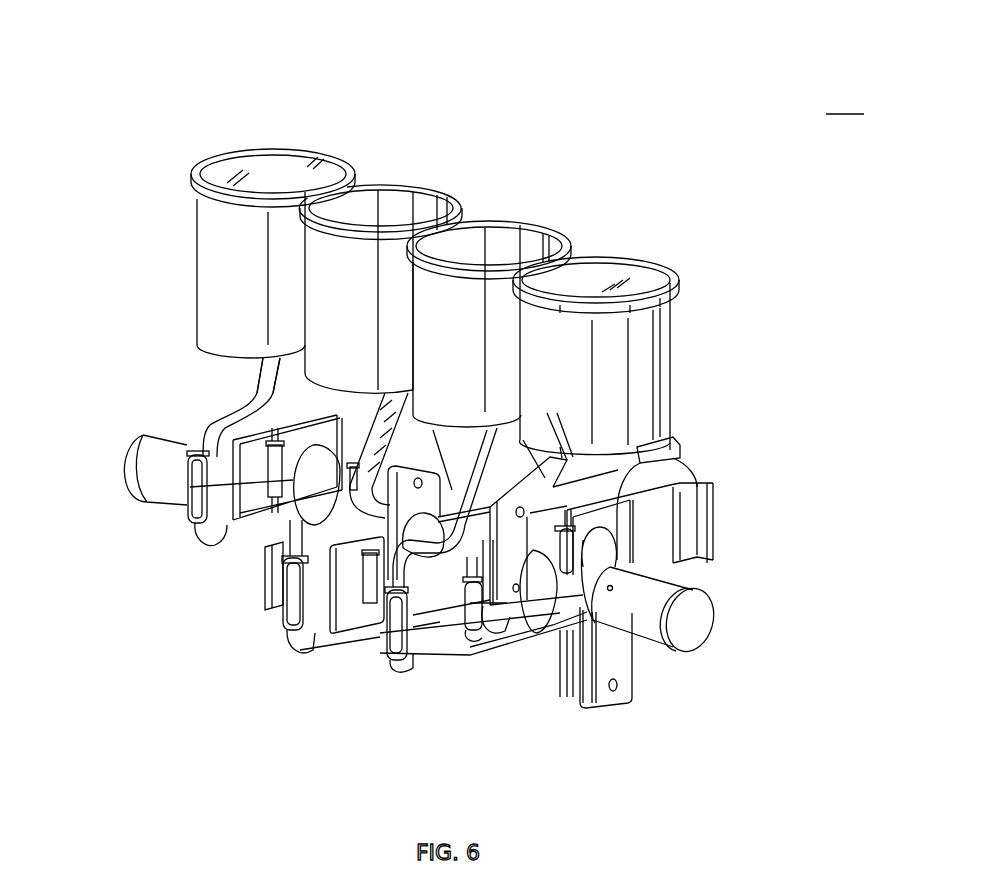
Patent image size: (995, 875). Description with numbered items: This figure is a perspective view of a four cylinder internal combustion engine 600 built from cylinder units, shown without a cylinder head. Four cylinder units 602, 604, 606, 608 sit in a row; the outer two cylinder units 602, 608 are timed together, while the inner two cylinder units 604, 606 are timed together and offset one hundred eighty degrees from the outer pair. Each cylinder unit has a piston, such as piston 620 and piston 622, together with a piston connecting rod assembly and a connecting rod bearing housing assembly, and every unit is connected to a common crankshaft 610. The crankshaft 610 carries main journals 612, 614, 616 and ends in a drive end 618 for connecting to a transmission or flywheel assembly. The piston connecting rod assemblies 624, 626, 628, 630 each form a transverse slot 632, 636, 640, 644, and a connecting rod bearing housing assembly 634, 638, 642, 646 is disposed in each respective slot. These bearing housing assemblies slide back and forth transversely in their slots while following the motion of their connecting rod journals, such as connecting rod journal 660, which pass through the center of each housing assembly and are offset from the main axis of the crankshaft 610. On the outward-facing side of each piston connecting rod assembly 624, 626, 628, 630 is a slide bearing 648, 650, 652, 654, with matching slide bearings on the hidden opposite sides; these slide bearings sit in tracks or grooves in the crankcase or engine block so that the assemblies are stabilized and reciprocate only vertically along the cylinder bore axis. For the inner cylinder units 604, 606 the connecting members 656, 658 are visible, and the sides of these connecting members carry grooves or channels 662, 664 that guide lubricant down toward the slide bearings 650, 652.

The four cylinder internal combustion engine 600 is at (845, 103).
The cylinder unit 602 is at (193, 168).
The cylinder unit 604 is at (424, 190).
The cylinder unit 606 is at (533, 222).
The cylinder unit 608 is at (657, 268).
The crankshaft 610 is at (153, 477).
The main journal 612 is at (273, 595).
The main journal 614 is at (357, 610).
The main journal 616 is at (483, 640).
The drive end 618 is at (653, 593).
The piston 620 is at (272, 173).
The piston 622 is at (598, 285).
The piston connecting rod assembly 624 is at (230, 418).
The piston connecting rod assembly 626 is at (313, 603).
The piston connecting rod assembly 628 is at (437, 672).
The piston connecting rod assembly 630 is at (703, 473).
The transverse slot 632 is at (257, 505).
The connecting rod bearing housing assembly 634 is at (280, 408).
The transverse slot 636 is at (362, 610).
The connecting rod bearing housing assembly 638 is at (328, 605).
The transverse slot 640 is at (433, 605).
The connecting rod bearing housing assembly 642 is at (527, 633).
The transverse slot 644 is at (533, 643).
The connecting rod bearing housing assembly 646 is at (627, 460).
The slide bearing 648 is at (190, 500).
The slide bearing 650 is at (265, 600).
The slide bearing 652 is at (392, 612).
The slide bearing 654 is at (437, 643).
The connecting member 656 is at (410, 420).
The connecting member 658 is at (652, 362).
The connecting rod journal 660 is at (212, 427).
The groove or channel 662 is at (380, 420).
The groove or channel 664 is at (650, 368).